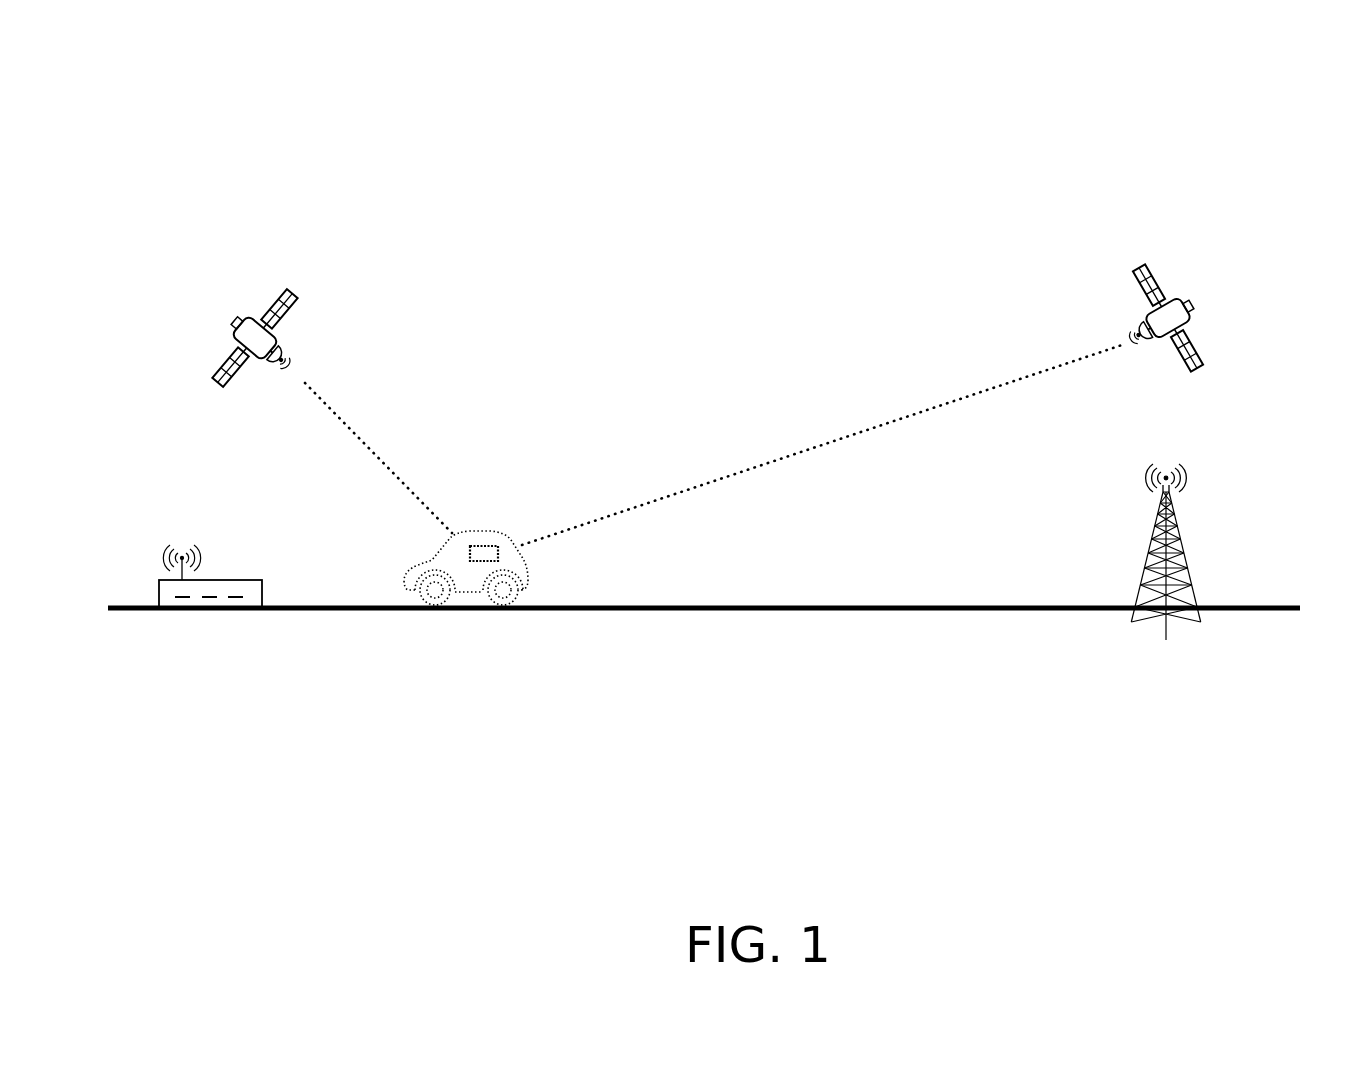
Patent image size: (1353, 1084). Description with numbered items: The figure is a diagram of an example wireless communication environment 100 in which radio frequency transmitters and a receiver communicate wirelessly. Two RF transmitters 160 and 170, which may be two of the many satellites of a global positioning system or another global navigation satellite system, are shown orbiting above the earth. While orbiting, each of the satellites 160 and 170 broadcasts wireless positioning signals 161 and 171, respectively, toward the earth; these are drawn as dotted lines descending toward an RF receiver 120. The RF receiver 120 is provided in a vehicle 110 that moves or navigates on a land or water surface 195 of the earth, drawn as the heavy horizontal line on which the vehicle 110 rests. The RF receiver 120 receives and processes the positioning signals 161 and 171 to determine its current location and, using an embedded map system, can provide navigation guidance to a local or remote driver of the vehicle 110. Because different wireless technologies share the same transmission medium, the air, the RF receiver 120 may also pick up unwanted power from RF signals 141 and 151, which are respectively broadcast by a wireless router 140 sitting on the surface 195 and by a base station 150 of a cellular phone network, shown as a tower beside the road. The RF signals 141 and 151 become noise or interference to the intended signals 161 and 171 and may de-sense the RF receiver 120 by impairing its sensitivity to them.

The wireless communication environment 100 is at (203, 85).
The vehicle 110 is at (432, 562).
The RF receiver 120 is at (487, 546).
The wireless router 140 is at (207, 622).
The RF signals 141 is at (197, 548).
The base station 150 is at (1172, 595).
The RF signals 151 is at (1145, 482).
The RF transmitter 160 is at (240, 322).
The positioning signal 161 is at (357, 432).
The RF transmitter 170 is at (1178, 300).
The positioning signal 171 is at (808, 452).
The land or water surface 195 is at (675, 610).